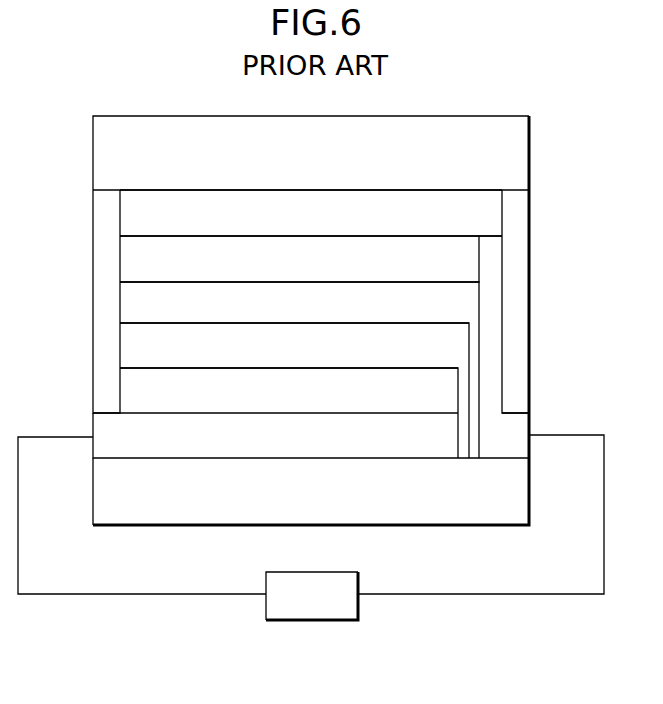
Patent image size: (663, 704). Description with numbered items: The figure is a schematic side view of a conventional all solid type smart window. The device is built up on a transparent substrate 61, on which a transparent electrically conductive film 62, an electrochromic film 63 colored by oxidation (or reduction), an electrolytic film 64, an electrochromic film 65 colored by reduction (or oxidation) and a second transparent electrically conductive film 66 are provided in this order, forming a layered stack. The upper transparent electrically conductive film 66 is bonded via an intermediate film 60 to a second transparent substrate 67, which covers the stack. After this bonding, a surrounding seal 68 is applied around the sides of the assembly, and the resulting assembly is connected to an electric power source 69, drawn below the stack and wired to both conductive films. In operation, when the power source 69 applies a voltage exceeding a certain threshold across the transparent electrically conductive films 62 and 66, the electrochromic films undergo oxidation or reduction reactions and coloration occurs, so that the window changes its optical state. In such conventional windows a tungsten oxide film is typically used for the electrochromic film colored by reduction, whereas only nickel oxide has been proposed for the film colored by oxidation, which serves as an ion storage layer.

The intermediate film 60 is at (485, 218).
The transparent substrate 61 is at (175, 513).
The transparent electrically conductive film 62 is at (108, 427).
The electrochromic film colored by oxidation 63 is at (448, 395).
The electrolytic film 64 is at (457, 345).
The electrochromic film colored by reduction 65 is at (467, 306).
The transparent electrically conductive film 66 is at (485, 258).
The transparent substrate 67 is at (515, 155).
The surrounding seal 68 is at (103, 247).
The electric power source 69 is at (335, 610).